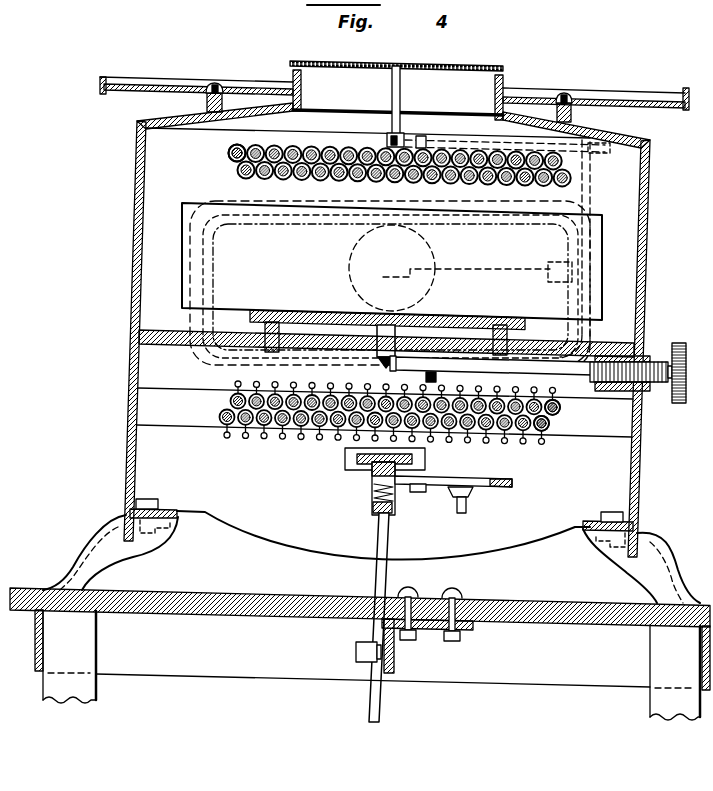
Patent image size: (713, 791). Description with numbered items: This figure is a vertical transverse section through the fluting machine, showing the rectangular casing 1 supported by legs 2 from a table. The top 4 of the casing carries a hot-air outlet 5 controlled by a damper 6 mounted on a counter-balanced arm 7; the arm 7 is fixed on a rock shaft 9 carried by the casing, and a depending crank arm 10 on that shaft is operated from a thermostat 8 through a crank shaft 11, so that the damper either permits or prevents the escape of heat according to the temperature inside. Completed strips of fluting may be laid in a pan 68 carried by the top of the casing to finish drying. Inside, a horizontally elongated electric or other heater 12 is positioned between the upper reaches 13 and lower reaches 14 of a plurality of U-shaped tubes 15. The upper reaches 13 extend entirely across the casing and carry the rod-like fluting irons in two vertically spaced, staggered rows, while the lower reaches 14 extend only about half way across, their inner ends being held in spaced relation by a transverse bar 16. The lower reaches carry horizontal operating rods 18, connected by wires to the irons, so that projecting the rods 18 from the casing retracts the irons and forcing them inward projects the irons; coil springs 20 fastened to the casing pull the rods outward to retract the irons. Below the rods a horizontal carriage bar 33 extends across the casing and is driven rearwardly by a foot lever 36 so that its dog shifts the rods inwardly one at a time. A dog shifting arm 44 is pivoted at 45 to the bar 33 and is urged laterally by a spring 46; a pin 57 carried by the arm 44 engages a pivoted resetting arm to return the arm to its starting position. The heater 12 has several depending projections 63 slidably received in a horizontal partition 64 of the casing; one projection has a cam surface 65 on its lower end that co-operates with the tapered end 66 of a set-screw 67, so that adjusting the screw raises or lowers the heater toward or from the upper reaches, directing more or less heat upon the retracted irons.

The casing 1 is at (128, 226).
The legs 2 is at (100, 532).
The top 4 is at (530, 112).
The hot-air outlet 5 is at (470, 92).
The damper 6 is at (456, 66).
The counter-balanced arm 7 is at (393, 82).
The thermostat 8 is at (347, 240).
The rock shaft 9 is at (447, 140).
The crank arm 10 is at (590, 188).
The crank shaft 11 is at (362, 176).
The heater 12 is at (190, 262).
The upper reaches 13 is at (230, 154).
The lower reaches 14 is at (232, 399).
The U-shaped tubes 15 is at (385, 150).
The transverse bar 16 is at (158, 404).
The operating rods 18 is at (550, 424).
The coil springs 20 is at (246, 440).
The carriage bar 33 is at (348, 458).
The foot lever 36 is at (368, 703).
The dog shifting arm 44 is at (510, 479).
The pivot 45 is at (366, 477).
The spring 46 is at (398, 488).
The pin 57 is at (466, 506).
The depending projections 63 is at (270, 322).
The horizontal partition 64 is at (165, 338).
The cam surface 65 is at (340, 322).
The tapered end 66 is at (405, 360).
The set-screw 67 is at (640, 356).
The pan 68 is at (166, 86).